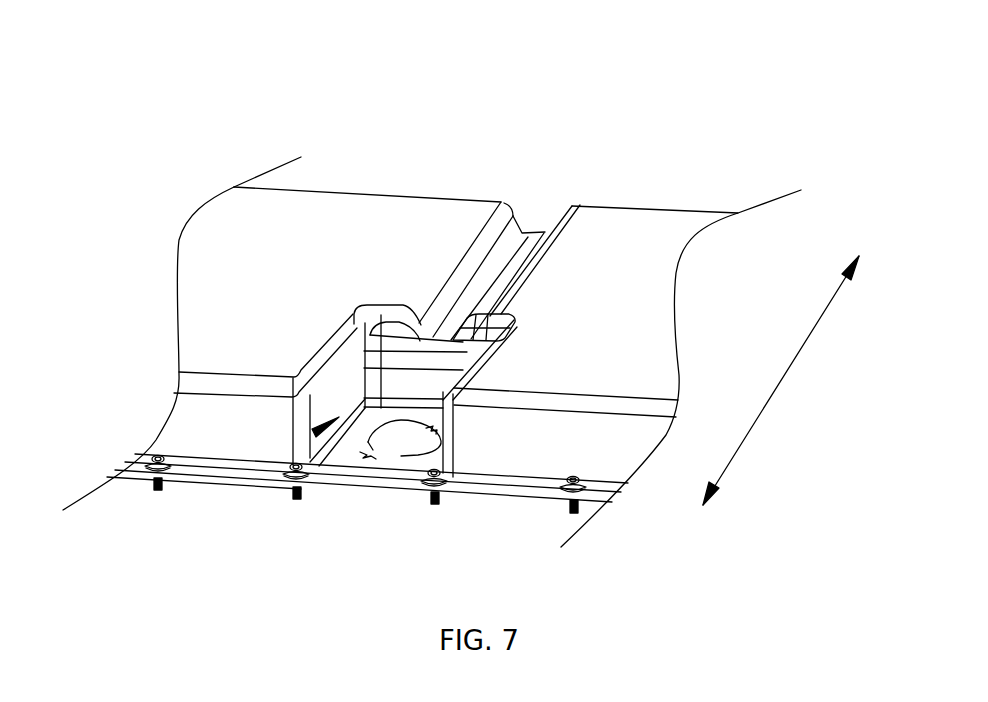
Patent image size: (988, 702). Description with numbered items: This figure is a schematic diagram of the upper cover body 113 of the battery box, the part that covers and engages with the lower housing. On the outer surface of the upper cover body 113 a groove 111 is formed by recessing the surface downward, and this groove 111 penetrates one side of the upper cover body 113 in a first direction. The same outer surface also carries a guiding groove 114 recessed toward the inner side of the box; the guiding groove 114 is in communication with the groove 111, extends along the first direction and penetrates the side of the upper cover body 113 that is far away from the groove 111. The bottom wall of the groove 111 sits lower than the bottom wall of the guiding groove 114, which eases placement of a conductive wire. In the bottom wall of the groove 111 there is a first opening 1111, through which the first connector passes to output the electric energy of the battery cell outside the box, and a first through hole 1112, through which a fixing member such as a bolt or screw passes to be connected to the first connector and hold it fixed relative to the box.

The upper cover body 113 is at (550, 48).
The guiding groove 114 is at (503, 244).
The groove 111 is at (287, 473).
The first opening 1111 is at (400, 446).
The first through hole 1112 is at (413, 456).